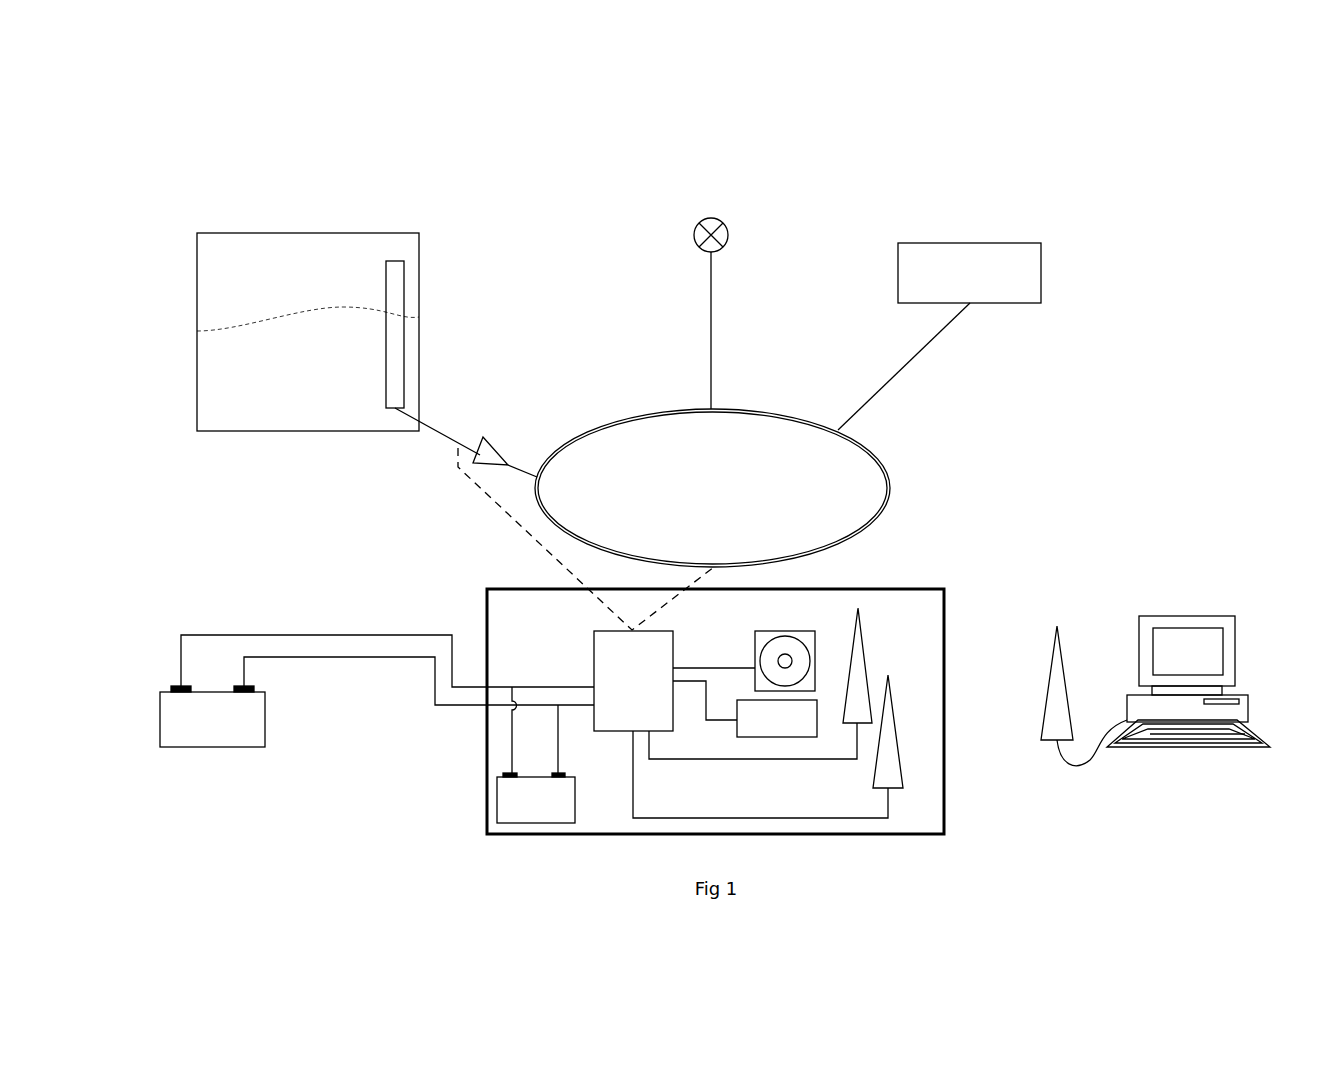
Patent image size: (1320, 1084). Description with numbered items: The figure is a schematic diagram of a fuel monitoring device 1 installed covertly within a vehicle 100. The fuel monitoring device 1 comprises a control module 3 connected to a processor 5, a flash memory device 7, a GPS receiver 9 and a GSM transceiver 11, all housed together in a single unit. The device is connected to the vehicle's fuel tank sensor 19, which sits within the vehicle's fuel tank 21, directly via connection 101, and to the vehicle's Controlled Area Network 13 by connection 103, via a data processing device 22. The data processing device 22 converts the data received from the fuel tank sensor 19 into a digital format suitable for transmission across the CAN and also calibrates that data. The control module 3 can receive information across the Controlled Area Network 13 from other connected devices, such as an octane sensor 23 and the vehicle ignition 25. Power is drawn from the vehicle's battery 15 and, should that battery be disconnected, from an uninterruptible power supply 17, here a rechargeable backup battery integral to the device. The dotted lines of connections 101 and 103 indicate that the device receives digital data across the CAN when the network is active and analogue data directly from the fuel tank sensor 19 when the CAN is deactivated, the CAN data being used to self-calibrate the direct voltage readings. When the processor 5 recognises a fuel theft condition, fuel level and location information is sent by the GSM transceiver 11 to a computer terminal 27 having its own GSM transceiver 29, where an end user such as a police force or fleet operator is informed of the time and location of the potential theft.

The vehicle 100 is at (846, 196).
The fuel monitoring device 1 is at (950, 598).
The control module 3 is at (607, 628).
The processor 5 is at (772, 737).
The flash memory device 7 is at (795, 630).
The GPS receiver 9 is at (897, 717).
The GSM transceiver 11 is at (863, 617).
The Controlled Area Network 13 is at (885, 462).
The battery 15 is at (233, 747).
The uninterruptible power supply 17 is at (495, 794).
The fuel tank sensor 19 is at (385, 393).
The fuel tank 21 is at (419, 278).
The data processing device 22 is at (486, 448).
The octane sensor 23 is at (693, 238).
The vehicle ignition 25 is at (939, 336).
The computer terminal 27 is at (1182, 747).
The GSM transceiver 29 is at (1063, 630).
The connection 101 is at (455, 450).
The connection 103 is at (660, 615).